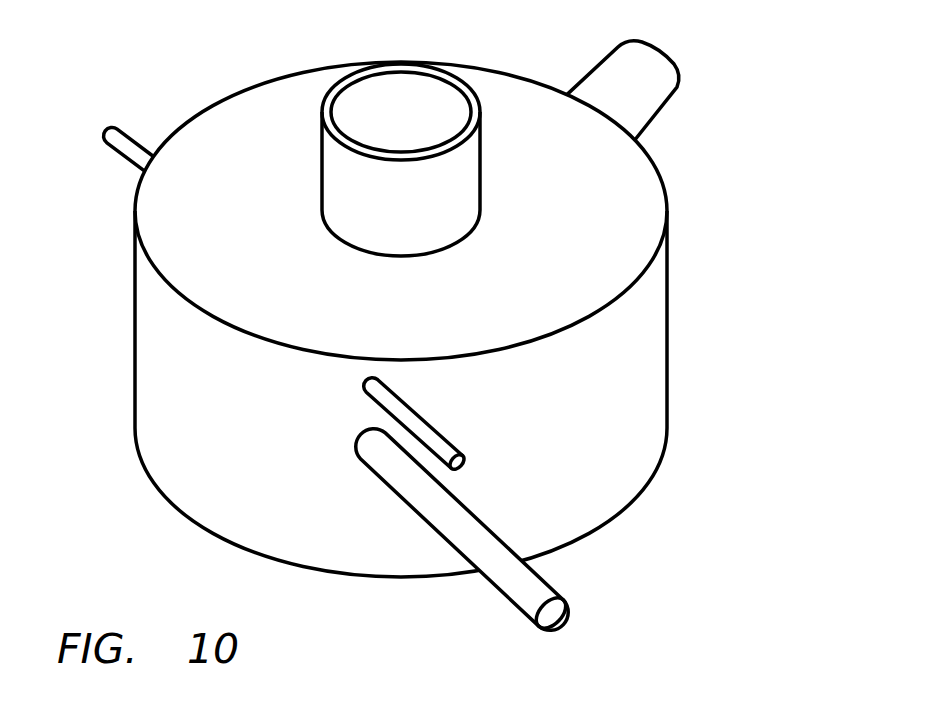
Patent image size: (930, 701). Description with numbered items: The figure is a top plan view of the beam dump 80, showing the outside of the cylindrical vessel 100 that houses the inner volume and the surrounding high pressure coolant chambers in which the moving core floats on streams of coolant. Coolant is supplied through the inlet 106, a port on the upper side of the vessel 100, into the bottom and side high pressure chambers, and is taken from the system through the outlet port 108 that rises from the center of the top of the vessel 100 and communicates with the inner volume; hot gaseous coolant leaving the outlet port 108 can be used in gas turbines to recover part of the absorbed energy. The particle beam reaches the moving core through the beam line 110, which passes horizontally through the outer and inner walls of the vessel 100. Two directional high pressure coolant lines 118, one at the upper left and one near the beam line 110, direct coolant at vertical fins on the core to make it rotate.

The beam dump 80 is at (707, 310).
The vessel 100 is at (637, 195).
The inlet 106 is at (658, 77).
The outlet port 108 is at (400, 100).
The beam line 110 is at (517, 590).
The directional high pressure coolant lines 118 is at (120, 143).